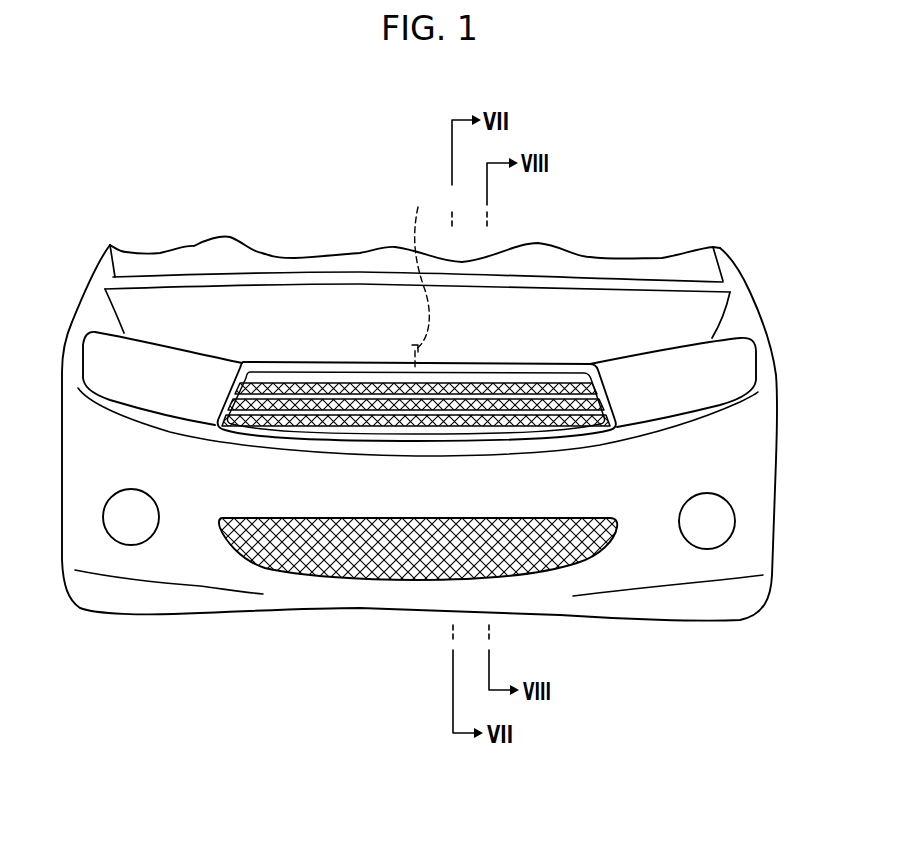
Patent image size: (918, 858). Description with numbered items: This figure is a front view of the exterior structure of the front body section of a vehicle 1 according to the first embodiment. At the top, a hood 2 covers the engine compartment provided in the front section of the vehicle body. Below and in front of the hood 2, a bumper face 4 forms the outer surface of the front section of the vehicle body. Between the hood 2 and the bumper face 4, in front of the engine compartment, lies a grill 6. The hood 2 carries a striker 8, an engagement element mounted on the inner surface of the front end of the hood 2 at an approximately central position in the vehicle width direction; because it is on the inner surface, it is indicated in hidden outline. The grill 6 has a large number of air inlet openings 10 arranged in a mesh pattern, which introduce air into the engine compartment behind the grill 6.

The vehicle 1 is at (731, 187).
The hood 2 is at (293, 313).
The bumper face 4 is at (697, 467).
The grill 6 is at (368, 380).
The striker 8 is at (420, 273).
The air inlet openings 10 is at (515, 383).